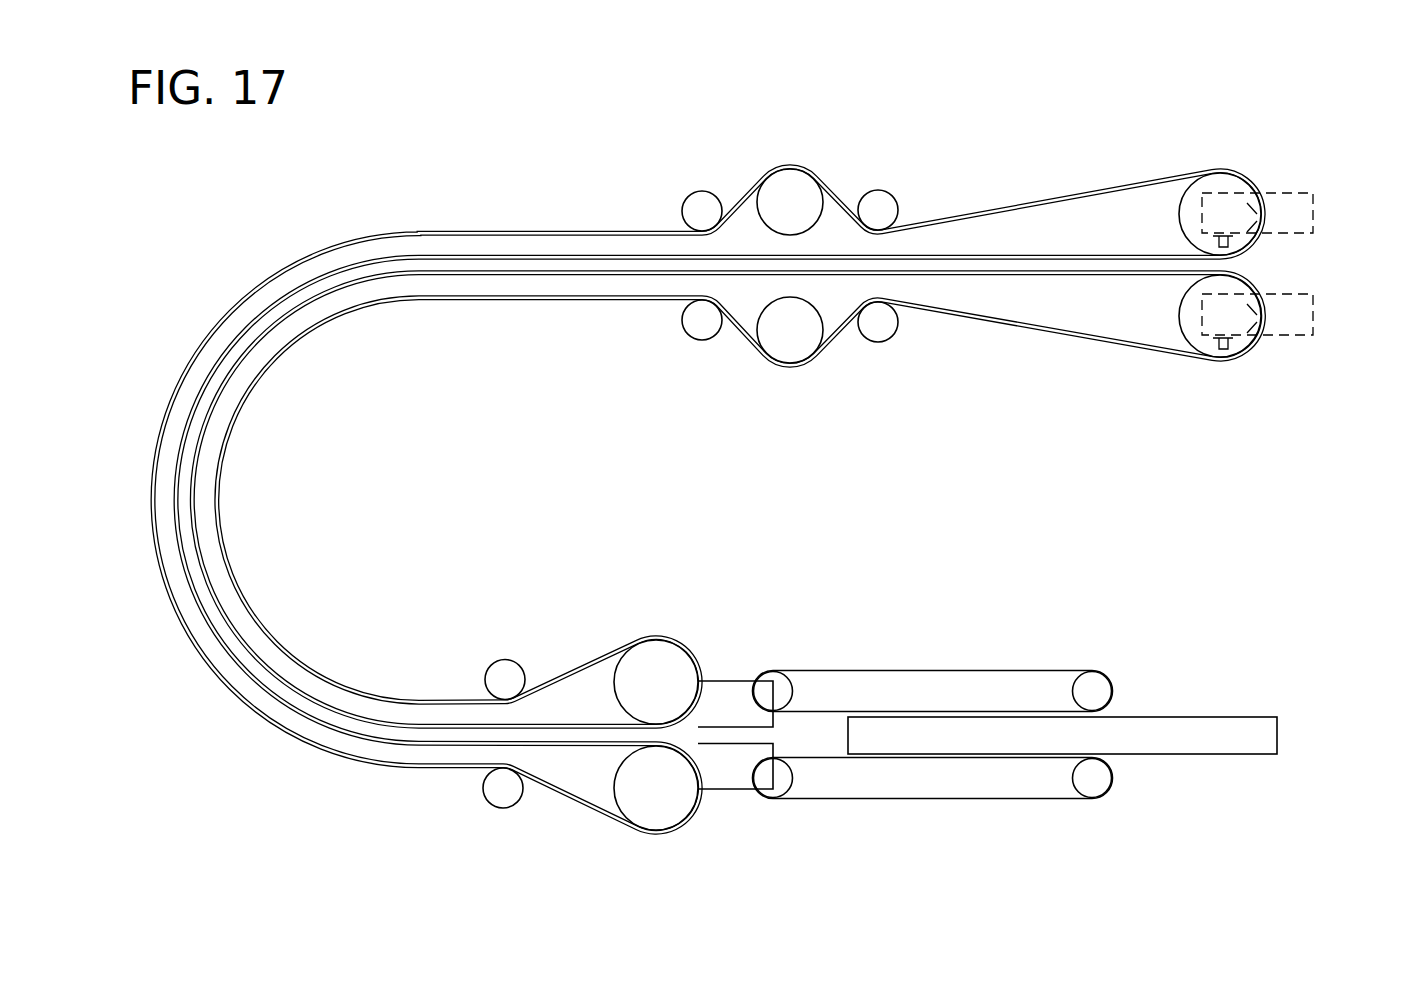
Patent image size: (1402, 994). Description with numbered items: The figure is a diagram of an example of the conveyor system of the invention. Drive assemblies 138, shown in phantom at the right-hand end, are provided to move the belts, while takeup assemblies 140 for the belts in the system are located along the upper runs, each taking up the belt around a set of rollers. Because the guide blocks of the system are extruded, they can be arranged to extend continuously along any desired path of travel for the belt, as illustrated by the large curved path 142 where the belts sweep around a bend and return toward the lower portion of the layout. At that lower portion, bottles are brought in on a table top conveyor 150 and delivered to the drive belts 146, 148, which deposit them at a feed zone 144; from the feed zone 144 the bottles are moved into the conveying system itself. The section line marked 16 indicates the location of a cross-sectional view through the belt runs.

The section line 16- 16 is at (500, 342).
The drive assemblies 138 is at (1285, 222).
The takeup assemblies 140 is at (818, 162).
The path of travel of the belt 142 is at (240, 499).
The feed zone 144 is at (723, 681).
The drive belt 146 is at (913, 670).
The drive belt 148 is at (960, 800).
The table top conveyor 150 is at (1197, 723).